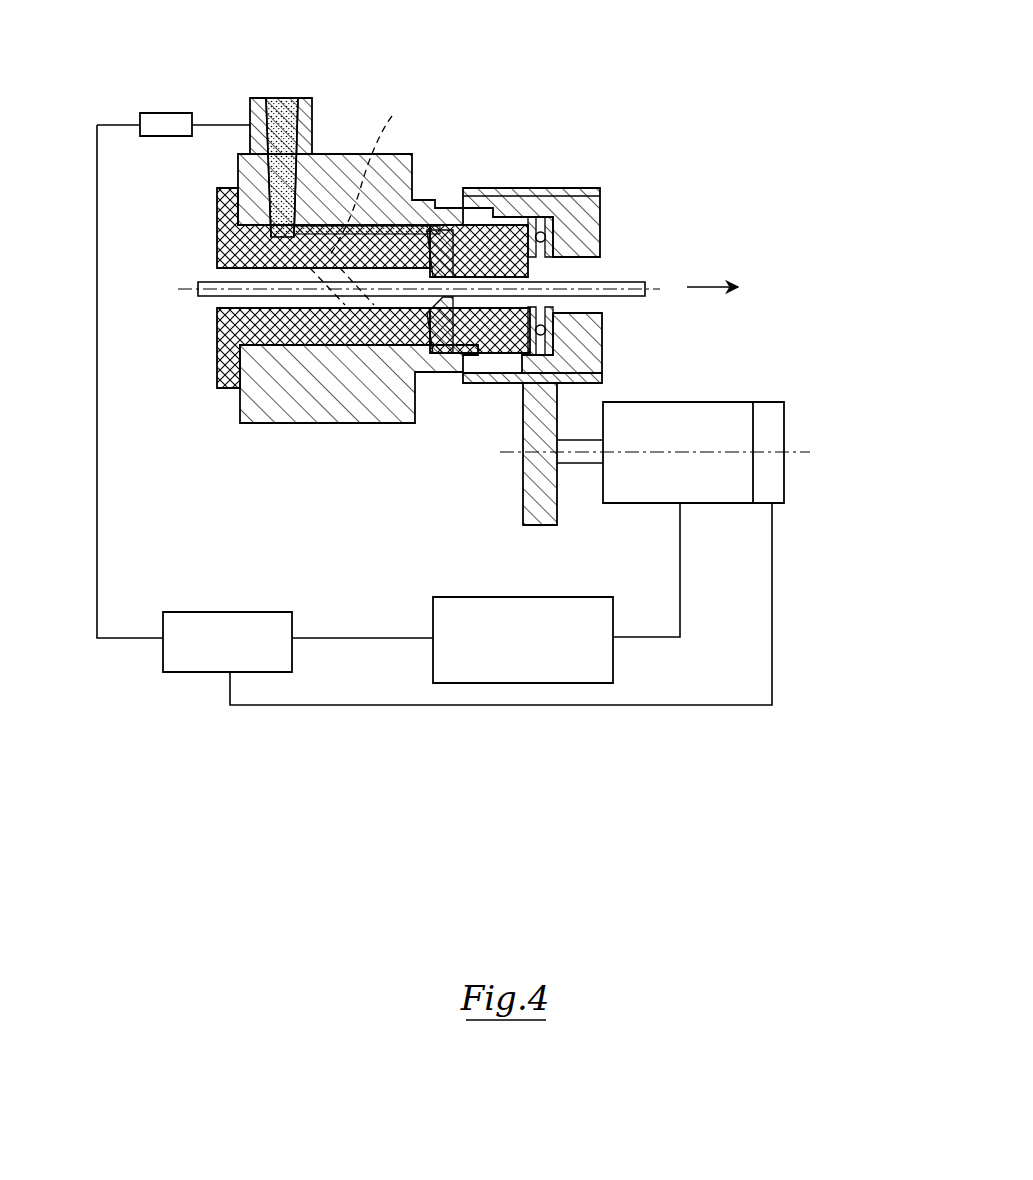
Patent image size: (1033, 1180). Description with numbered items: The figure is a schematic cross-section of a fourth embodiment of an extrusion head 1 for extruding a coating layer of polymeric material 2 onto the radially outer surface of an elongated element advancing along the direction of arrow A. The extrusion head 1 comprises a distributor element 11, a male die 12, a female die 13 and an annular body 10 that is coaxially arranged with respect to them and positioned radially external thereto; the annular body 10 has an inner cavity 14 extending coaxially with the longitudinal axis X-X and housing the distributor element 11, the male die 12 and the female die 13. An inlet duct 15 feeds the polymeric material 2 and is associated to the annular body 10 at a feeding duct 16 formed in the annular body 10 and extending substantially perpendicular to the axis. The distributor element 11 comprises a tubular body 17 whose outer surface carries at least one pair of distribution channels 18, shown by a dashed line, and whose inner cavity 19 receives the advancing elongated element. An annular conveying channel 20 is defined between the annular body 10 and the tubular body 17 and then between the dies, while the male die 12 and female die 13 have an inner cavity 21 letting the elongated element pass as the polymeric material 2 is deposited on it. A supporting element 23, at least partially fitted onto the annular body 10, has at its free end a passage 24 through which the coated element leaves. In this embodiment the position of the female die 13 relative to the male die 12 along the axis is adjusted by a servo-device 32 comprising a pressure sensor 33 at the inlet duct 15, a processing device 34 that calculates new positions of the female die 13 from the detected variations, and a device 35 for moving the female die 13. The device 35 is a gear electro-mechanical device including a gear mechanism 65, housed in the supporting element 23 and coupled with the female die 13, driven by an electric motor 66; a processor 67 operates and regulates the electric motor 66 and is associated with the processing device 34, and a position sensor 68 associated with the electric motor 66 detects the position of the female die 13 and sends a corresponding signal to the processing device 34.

The extrusion head 1 is at (641, 106).
The polymeric material 2 is at (277, 100).
The annular body 10 is at (238, 178).
The distributor element 11 is at (208, 240).
The male die 12 is at (432, 350).
The female die 13 is at (478, 378).
The inner cavity 14 is at (410, 176).
The inlet duct 15 is at (313, 100).
The feeding duct 16 is at (305, 168).
The tubular body 17 is at (217, 213).
The distribution channels 18 is at (385, 123).
The inner cavity 19 is at (220, 305).
The annular conveying channel 20 is at (524, 242).
The inner cavity 21 is at (466, 239).
The supporting element 23 is at (600, 212).
The passage 24 is at (600, 273).
The servo-device 32 is at (540, 731).
The pressure sensor 33 is at (162, 112).
The processing device 34 is at (197, 650).
The device for moving the female die 35 is at (782, 534).
The gear mechanism 65 is at (557, 410).
The electric motor 66 is at (703, 418).
The processor 67 is at (482, 620).
The position sensor 68 is at (776, 428).